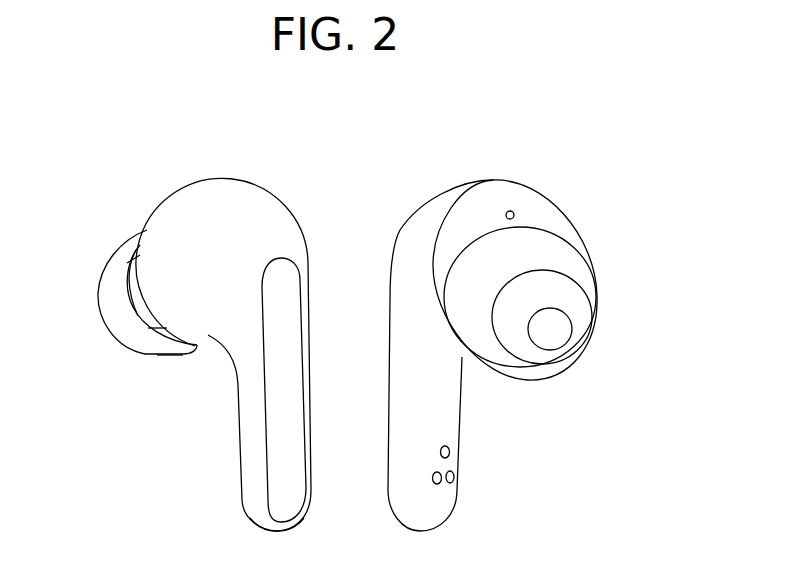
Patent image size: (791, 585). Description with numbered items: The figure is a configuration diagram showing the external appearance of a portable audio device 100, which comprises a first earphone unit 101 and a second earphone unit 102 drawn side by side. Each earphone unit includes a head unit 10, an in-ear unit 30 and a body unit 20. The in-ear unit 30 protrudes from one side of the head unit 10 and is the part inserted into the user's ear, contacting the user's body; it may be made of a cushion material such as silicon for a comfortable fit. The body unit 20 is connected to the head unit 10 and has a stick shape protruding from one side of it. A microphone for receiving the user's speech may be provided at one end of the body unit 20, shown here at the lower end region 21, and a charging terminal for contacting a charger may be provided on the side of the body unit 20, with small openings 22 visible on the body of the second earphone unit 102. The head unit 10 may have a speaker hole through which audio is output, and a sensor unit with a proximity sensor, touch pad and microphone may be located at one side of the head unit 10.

The portable audio device 100 is at (100, 120).
The first earphone unit 101 is at (182, 202).
The second earphone unit 102 is at (488, 180).
The head unit 10 is at (242, 208).
The body unit 20 is at (281, 442).
The stem end portion 21 is at (270, 532).
The openings (microphone holes) 22 is at (455, 475).
The in-ear unit 30 is at (105, 294).